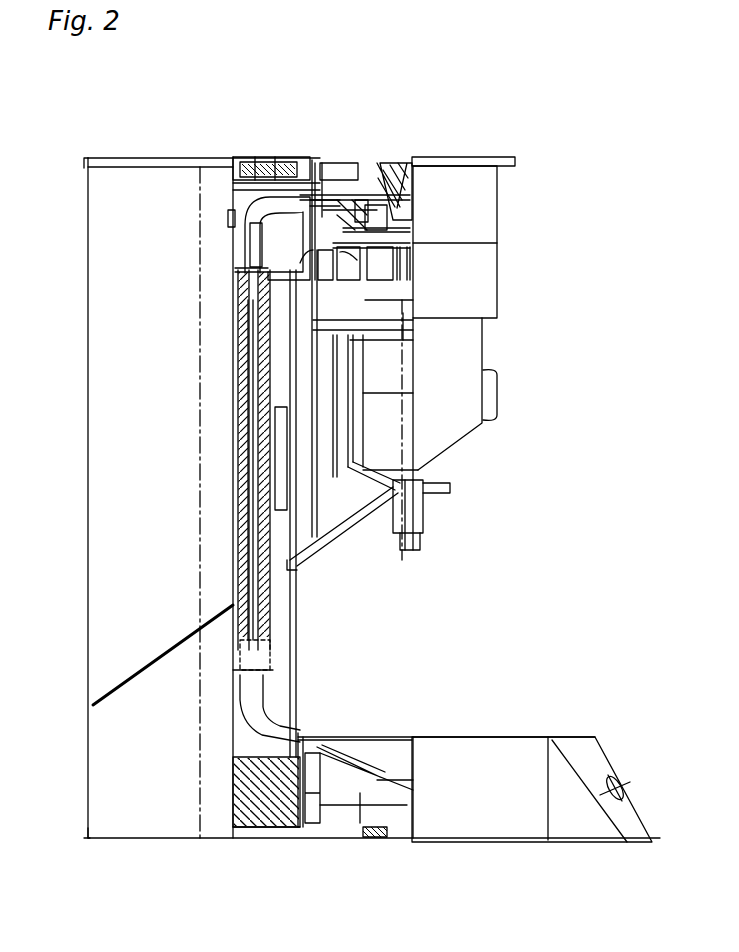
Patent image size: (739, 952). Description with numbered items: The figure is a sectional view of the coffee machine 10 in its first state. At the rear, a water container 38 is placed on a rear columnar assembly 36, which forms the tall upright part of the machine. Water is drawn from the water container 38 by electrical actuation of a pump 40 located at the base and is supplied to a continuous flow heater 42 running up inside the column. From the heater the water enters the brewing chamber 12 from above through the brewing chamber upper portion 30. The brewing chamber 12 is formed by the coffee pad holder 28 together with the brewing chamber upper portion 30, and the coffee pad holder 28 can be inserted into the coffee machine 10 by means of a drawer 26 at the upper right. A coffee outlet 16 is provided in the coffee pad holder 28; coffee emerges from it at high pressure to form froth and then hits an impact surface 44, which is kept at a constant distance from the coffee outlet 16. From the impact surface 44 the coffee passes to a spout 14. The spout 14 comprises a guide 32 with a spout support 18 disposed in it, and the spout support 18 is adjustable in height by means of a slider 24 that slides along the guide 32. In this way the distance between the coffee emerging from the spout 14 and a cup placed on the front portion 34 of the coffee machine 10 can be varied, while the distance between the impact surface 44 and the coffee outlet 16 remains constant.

The coffee machine 10 is at (38, 468).
The brewing chamber 12 is at (413, 235).
The spout 14 is at (427, 523).
The coffee outlet 16 is at (413, 263).
The spout support 18 is at (397, 543).
The slider 24 is at (440, 485).
The drawer 26 is at (497, 297).
The coffee pad holder 28 is at (359, 200).
The brewing chamber upper portion 30 is at (408, 163).
The guide 32 is at (427, 512).
The front portion 34 is at (547, 733).
The rear columnar assembly 36 is at (90, 780).
The water container 38 is at (85, 383).
The pump 40 is at (265, 813).
The continuous flow heater 42 is at (233, 537).
The impact surface 44 is at (367, 393).